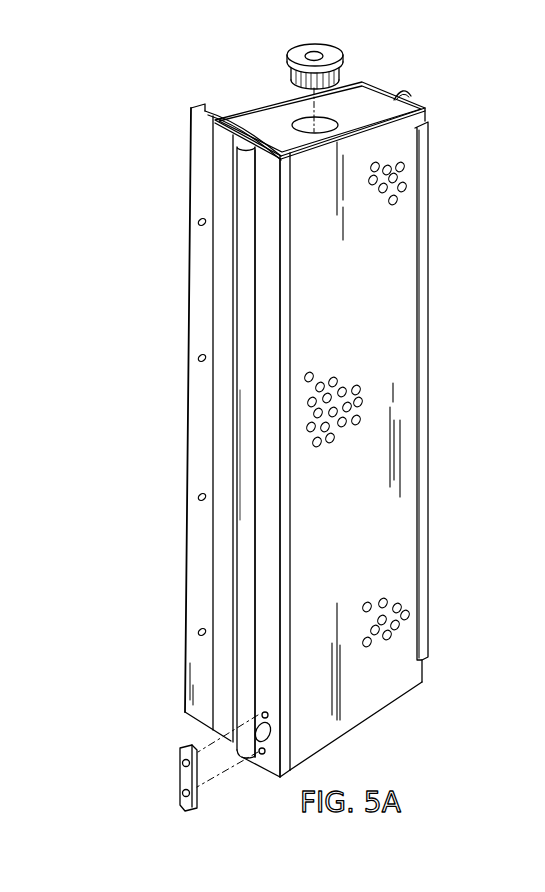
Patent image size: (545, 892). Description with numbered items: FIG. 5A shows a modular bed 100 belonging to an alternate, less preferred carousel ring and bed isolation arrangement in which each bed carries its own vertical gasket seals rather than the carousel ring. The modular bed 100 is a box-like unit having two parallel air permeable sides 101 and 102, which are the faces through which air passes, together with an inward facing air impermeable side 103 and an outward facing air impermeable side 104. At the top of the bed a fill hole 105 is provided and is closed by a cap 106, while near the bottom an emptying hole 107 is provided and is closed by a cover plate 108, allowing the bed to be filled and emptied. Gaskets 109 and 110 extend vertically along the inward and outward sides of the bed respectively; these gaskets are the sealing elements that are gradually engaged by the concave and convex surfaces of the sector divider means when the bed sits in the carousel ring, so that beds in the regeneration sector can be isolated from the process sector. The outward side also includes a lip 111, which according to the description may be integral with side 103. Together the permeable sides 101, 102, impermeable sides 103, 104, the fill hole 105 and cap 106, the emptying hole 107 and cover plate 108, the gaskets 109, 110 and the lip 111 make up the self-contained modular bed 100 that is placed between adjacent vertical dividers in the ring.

The modular bed 100 is at (411, 690).
The air permeable side 101 is at (362, 508).
The air permeable side 102 is at (247, 113).
The inward facing air impermeable side 103 is at (268, 242).
The outward facing air impermeable side 104 is at (423, 232).
The fill hole 105 is at (302, 120).
The cap 106 is at (343, 53).
The emptying hole 107 is at (272, 729).
The cover plate 108 is at (178, 764).
The gasket 109 is at (245, 318).
The gasket 110 is at (407, 93).
The lip 111 is at (197, 260).